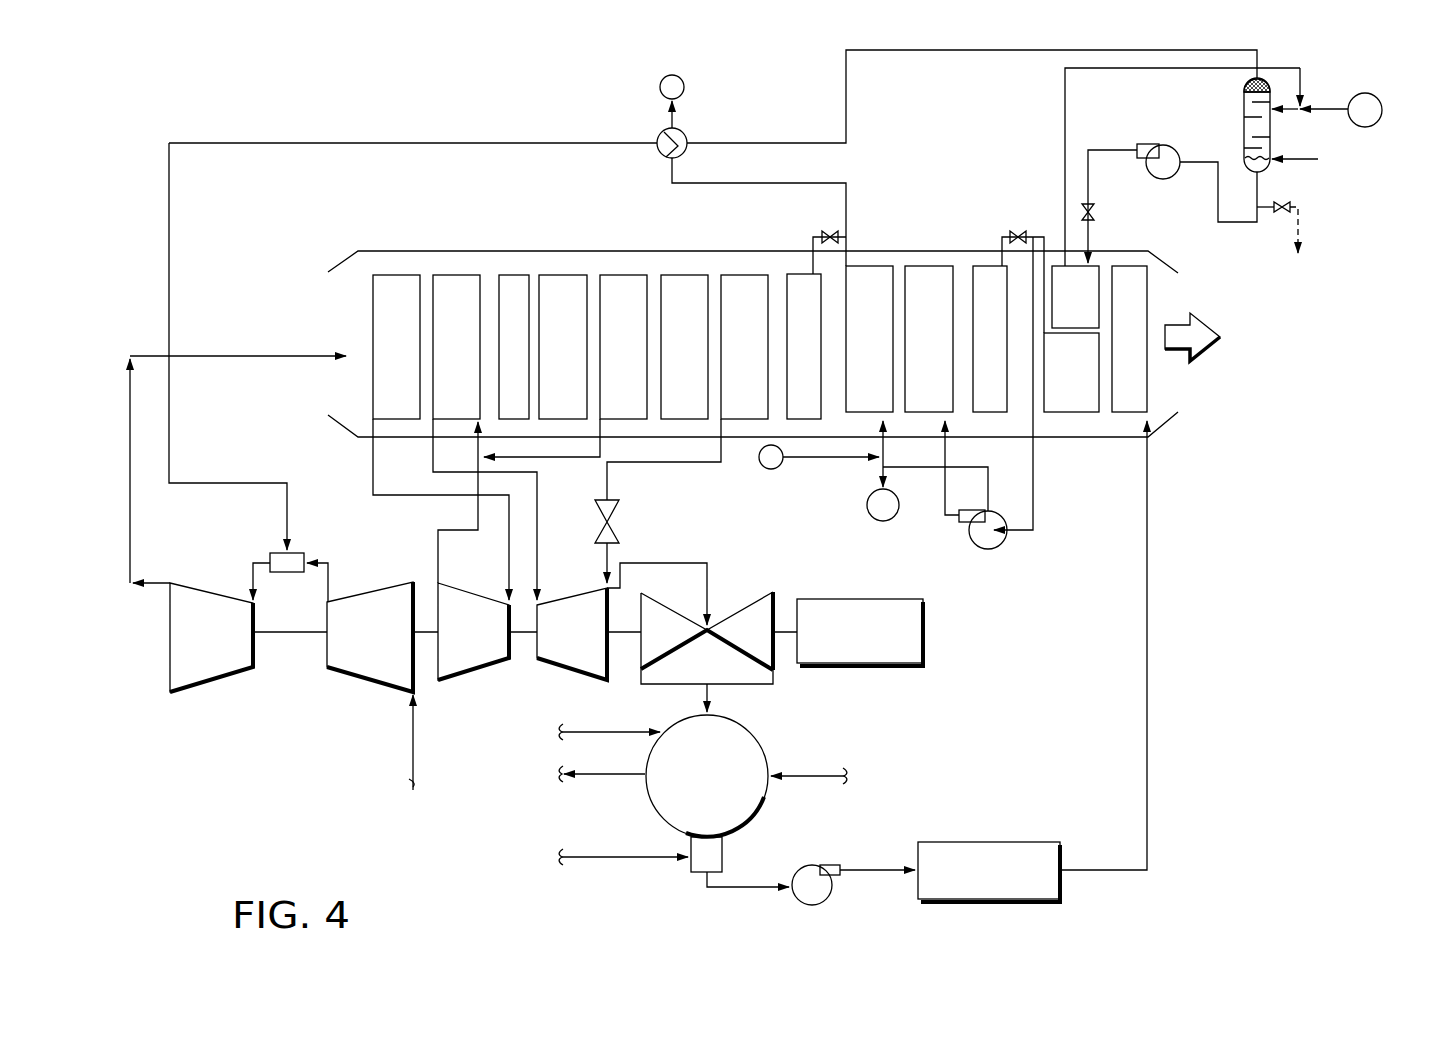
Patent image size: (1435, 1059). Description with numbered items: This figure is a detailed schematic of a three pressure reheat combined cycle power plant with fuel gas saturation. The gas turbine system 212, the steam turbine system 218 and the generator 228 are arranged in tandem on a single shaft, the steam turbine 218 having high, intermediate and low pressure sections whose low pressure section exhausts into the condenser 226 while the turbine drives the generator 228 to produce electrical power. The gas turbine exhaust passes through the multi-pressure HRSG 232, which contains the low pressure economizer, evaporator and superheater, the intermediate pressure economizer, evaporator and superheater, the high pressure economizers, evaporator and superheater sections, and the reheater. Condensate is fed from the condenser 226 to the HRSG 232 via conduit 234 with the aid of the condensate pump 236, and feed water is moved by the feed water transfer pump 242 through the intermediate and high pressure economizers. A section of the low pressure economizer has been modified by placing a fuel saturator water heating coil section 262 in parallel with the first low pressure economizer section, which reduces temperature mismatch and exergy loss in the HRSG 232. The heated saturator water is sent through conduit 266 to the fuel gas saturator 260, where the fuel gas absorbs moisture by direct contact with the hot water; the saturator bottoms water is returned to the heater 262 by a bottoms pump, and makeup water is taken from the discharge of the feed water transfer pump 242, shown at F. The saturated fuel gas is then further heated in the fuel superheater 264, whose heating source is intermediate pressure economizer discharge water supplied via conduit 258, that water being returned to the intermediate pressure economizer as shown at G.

The gas turbine system 212 is at (340, 572).
The steam turbine system 218 is at (566, 680).
The condenser 226 is at (776, 748).
The generator 228 is at (907, 663).
The HRSG 232 is at (455, 235).
The conduit 234 is at (1148, 523).
The condensate pump 236 is at (820, 850).
The feed water transfer pump 242 is at (1007, 545).
The conduit 258 is at (848, 207).
The fuel gas saturator 260 is at (1272, 142).
The fuel saturator water heating coil section 262 is at (1045, 262).
The fuel superheater 264 is at (682, 156).
The conduit 266 is at (1065, 110).